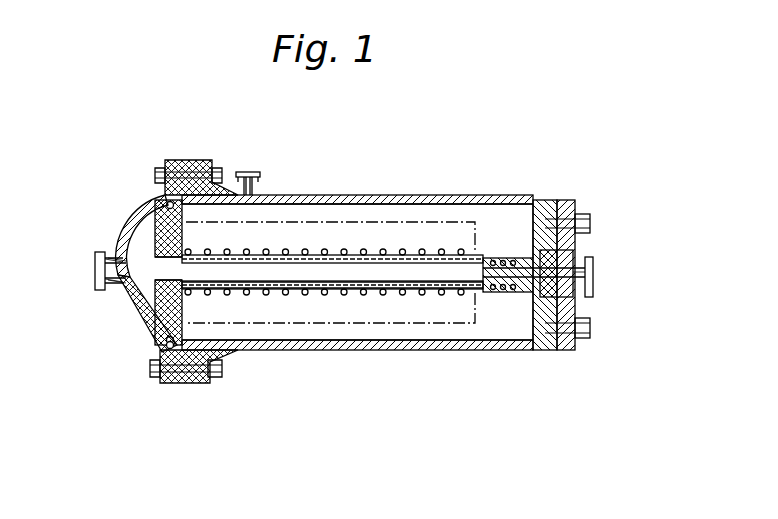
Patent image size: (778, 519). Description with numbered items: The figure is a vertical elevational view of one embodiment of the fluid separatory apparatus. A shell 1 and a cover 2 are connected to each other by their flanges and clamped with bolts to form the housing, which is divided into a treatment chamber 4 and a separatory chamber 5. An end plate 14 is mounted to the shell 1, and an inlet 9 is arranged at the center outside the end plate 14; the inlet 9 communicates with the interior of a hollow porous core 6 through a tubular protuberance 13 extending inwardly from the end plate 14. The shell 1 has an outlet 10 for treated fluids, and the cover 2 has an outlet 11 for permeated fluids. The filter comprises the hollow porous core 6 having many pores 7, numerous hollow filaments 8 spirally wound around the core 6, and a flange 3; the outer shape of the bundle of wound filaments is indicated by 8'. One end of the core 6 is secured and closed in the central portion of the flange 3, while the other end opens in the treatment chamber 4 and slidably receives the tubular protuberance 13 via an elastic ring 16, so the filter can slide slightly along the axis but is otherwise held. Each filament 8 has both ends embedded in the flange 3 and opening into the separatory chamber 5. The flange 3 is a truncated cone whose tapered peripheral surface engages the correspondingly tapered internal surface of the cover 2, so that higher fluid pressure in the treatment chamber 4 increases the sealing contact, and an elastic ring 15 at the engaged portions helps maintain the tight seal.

The shell 1 is at (372, 199).
The cover 2 is at (136, 228).
The flange 3 is at (154, 238).
The treatment chamber 4 is at (305, 212).
The separatory chamber 5 is at (140, 300).
The hollow porous core 6 is at (338, 291).
The pores 7 is at (398, 300).
The hollow filaments 8 is at (332, 339).
The outer shape of bundle of hollow filaments 8' is at (332, 208).
The inlet 9 is at (593, 274).
The outlet for treated fluids 10 is at (248, 172).
The outlet for permeated fluids 11 is at (96, 270).
The tubular protuberance 13 is at (528, 298).
The end plate 14 is at (566, 200).
The elastic ring 15 is at (160, 354).
The elastic ring 16 is at (499, 257).